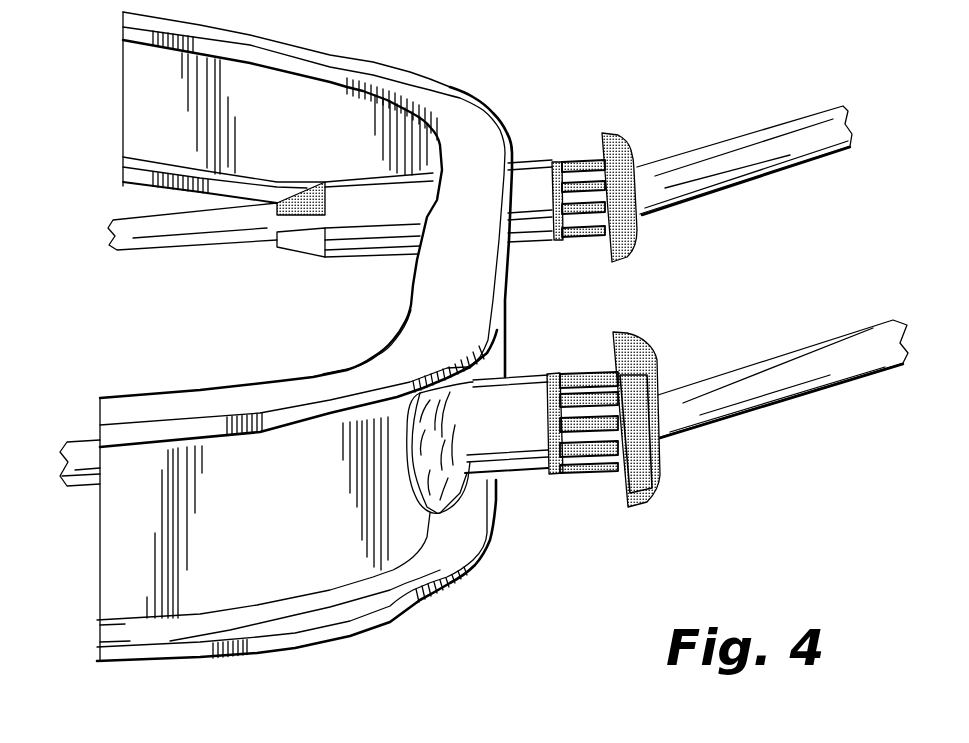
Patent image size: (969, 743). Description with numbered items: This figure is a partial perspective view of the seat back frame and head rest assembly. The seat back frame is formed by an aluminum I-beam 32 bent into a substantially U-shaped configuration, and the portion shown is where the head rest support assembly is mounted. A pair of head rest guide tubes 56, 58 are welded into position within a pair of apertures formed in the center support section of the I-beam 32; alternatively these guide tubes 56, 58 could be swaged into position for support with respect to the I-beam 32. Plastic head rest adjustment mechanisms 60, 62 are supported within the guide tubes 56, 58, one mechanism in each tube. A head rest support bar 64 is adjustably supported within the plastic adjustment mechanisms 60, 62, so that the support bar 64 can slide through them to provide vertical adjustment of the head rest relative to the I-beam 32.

The I-beam 32 is at (386, 73).
The head rest guide tube 56 is at (537, 178).
The plastic head rest adjustment mechanism 60 is at (615, 141).
The head rest guide tube 58 is at (537, 382).
The plastic head rest adjustment mechanism 62 is at (643, 348).
The head rest support bar 64 is at (765, 390).